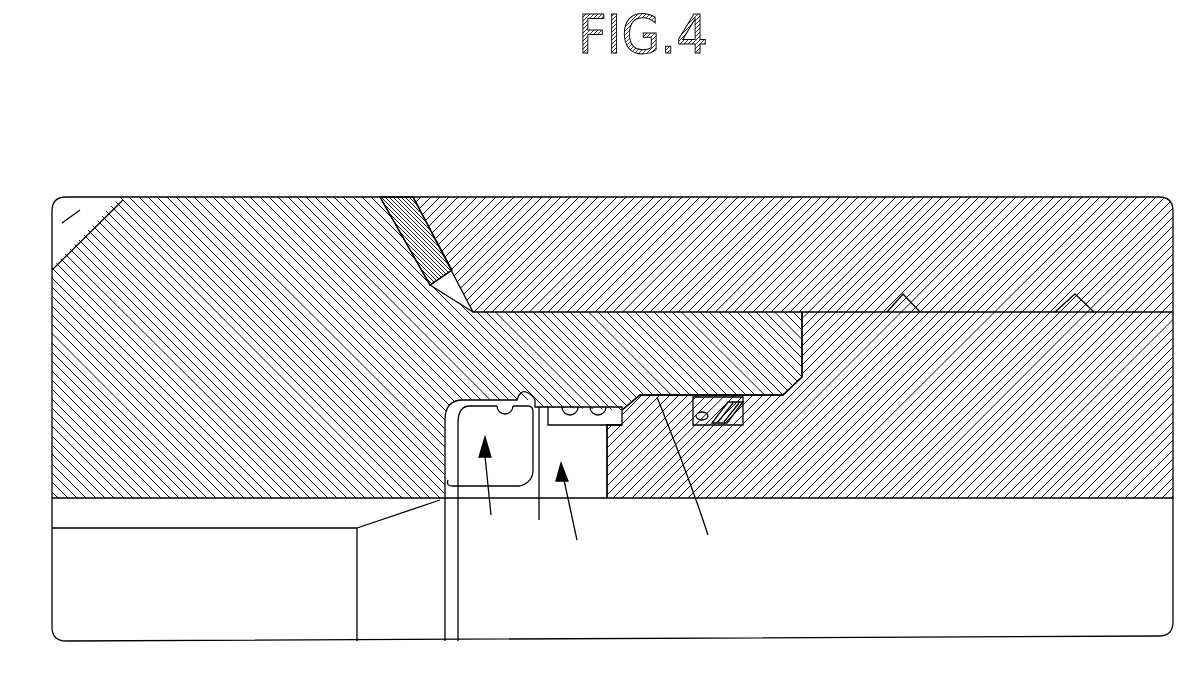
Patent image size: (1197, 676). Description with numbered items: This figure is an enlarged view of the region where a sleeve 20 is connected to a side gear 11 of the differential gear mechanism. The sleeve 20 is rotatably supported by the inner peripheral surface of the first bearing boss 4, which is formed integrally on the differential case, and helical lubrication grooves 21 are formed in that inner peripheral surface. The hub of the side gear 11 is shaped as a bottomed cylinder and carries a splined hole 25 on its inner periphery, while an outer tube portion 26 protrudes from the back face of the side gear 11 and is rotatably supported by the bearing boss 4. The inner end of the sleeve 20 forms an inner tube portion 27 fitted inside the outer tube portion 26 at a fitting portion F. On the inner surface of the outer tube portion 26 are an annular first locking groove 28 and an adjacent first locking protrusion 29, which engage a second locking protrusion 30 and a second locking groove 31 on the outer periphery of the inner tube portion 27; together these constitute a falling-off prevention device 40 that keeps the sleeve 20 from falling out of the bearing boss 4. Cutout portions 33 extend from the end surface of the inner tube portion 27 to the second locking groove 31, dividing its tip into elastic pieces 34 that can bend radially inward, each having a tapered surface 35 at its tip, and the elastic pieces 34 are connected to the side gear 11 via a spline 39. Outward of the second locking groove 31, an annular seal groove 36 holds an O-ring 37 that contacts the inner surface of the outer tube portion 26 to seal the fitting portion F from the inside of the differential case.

The first bearing boss 4 is at (845, 217).
The side gear 11 is at (226, 348).
The sleeve 20 is at (974, 440).
The helical lubrication groove 21 is at (904, 296).
The splined hole 25 is at (163, 549).
The outer tube portion 26 is at (652, 330).
The inner tube portion 27 is at (675, 398).
The first locking groove 28 is at (507, 408).
The first locking protrusion 29 is at (573, 410).
The second locking protrusion 30 is at (516, 485).
The second locking groove 31 is at (582, 428).
The cutout portion 33 is at (610, 484).
The elastic piece 34 is at (575, 515).
The tapered surface 35 is at (443, 398).
The seal groove 36 is at (737, 427).
The O-ring 37 is at (745, 408).
The spline 39 is at (489, 489).
The falling-off prevention device 40 is at (473, 397).
The fitting portion F is at (690, 479).